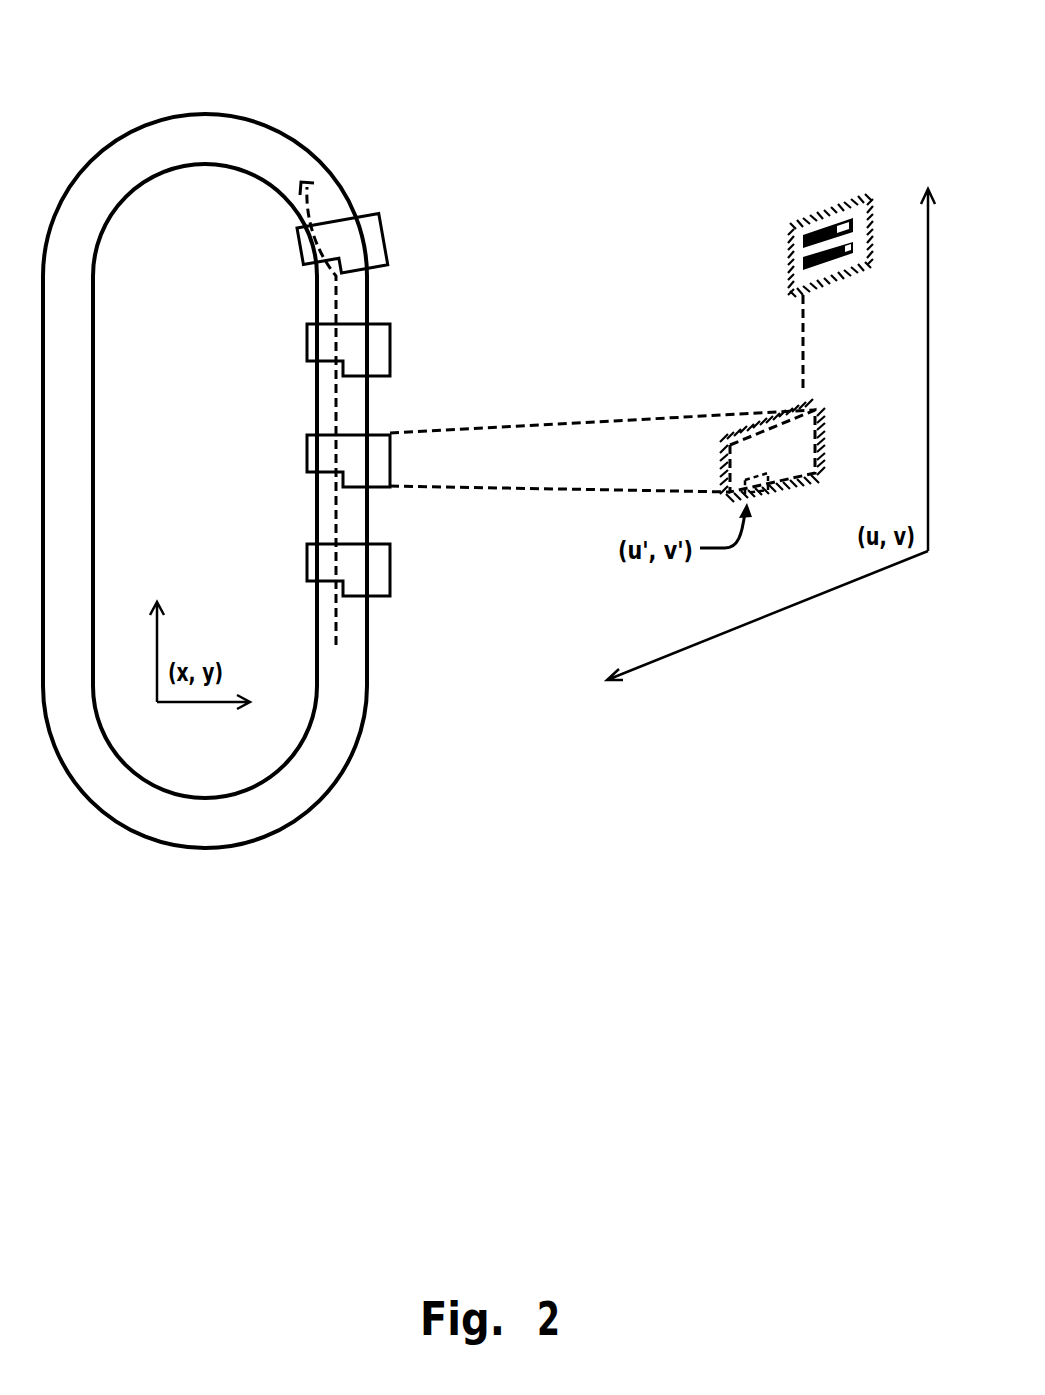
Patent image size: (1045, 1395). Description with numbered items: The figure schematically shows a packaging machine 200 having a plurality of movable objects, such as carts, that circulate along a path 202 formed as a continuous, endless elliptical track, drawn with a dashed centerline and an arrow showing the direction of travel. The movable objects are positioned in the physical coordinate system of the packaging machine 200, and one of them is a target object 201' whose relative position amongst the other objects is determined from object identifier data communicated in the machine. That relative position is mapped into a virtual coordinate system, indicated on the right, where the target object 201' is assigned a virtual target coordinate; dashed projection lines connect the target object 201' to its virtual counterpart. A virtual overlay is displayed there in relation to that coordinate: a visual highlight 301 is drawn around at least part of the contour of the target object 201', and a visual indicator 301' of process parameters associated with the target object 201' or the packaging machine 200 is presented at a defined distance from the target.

The packaging machine 200 is at (152, 48).
The path 202 is at (317, 193).
The target object 201' is at (291, 456).
The visual highlight 301 is at (725, 425).
The visual indicator 301' is at (767, 225).